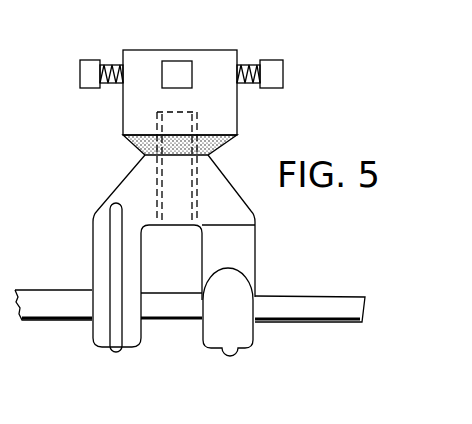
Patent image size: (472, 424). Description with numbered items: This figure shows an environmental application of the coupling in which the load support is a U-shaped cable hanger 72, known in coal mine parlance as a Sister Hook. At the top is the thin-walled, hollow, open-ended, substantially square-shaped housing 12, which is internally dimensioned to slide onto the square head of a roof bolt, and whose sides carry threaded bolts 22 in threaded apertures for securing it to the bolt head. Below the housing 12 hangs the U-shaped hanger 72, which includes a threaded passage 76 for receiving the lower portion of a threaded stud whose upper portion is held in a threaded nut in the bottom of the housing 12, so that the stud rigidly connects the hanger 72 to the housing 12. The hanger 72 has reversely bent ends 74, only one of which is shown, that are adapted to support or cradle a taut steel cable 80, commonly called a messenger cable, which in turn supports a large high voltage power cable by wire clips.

The housing 12 is at (200, 47).
The threaded bolt 22 is at (90, 75).
The U-shaped cable hanger 72 is at (254, 206).
The reversely bent end 74 is at (230, 302).
The threaded passage 76 is at (175, 187).
The taut steel cable 80 is at (67, 307).